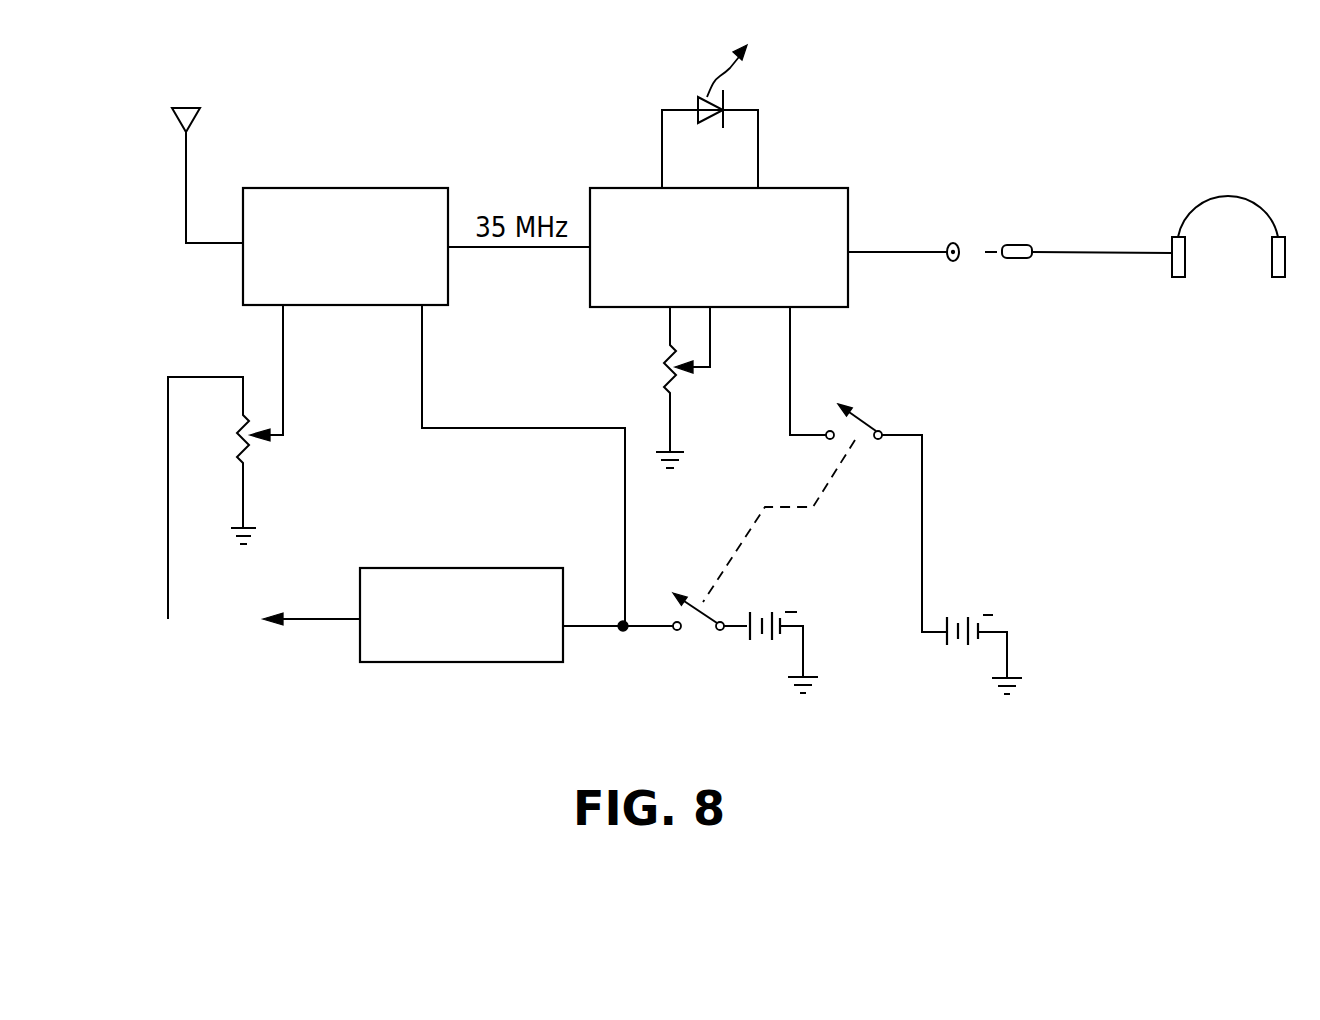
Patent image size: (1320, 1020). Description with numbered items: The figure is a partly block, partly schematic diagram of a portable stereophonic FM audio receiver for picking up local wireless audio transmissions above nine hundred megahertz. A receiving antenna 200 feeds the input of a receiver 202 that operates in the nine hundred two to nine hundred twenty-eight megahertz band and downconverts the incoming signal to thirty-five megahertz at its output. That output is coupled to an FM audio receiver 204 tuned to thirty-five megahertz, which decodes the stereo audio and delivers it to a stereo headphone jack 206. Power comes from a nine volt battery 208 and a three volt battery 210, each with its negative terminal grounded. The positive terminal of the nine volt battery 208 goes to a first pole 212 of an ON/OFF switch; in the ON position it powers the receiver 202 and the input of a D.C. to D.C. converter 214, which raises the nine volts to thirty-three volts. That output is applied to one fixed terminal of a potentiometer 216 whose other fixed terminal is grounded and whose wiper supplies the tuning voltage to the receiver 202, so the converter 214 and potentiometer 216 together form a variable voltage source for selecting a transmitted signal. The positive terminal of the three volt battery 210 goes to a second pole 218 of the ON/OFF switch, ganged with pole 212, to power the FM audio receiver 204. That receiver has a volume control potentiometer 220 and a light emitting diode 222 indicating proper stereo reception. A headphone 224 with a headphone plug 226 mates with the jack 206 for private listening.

The receiving antenna 200 is at (187, 157).
The 902 to 928 MHz receiver 202 is at (356, 188).
The FM audio receiver 204 is at (800, 188).
The stereo headphone jack 206 is at (953, 243).
The nine volt battery 208 is at (763, 643).
The three volt battery 210 is at (958, 645).
The first pole of ON/OFF switch 212 is at (713, 630).
The D.C. to D.C. converter 214 is at (485, 662).
The potentiometer 216 is at (247, 453).
The second pole of ON/OFF switch 218 is at (850, 418).
The potentiometer 220 is at (668, 358).
The light emitting diode 222 is at (698, 102).
The headphone 224 is at (1203, 200).
The headphone plug 226 is at (1020, 258).